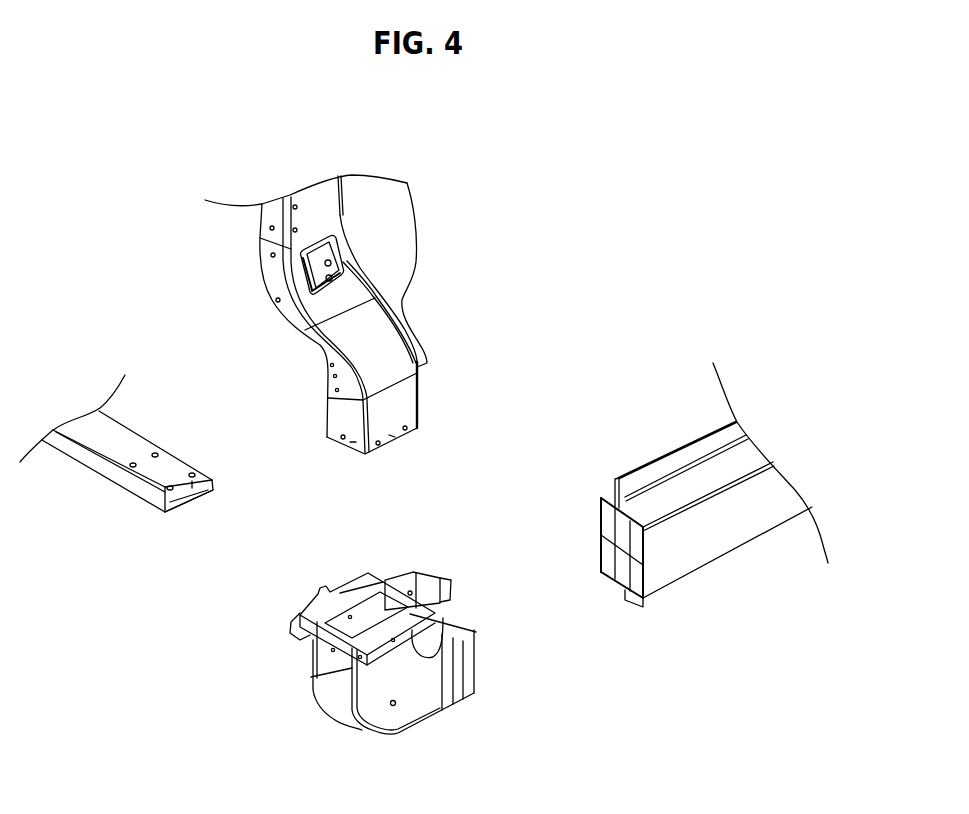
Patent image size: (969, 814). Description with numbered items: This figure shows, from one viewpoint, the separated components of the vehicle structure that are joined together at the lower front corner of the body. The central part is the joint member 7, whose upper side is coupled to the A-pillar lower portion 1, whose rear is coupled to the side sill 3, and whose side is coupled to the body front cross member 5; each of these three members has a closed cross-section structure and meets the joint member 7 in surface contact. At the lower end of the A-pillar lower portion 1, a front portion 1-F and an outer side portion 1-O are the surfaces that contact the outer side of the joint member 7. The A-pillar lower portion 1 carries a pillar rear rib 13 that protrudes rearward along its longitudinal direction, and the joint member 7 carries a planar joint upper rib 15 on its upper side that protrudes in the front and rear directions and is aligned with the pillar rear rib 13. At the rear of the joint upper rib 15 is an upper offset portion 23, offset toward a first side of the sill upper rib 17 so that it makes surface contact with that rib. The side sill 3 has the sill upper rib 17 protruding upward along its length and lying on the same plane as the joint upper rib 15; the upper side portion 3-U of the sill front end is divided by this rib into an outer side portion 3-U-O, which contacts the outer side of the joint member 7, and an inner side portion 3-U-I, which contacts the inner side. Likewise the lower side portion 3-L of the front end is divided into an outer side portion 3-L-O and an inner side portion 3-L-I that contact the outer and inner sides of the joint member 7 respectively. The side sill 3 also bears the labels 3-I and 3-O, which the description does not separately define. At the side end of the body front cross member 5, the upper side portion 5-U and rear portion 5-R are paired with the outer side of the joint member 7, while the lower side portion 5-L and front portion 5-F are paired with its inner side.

The A-pillar lower portion 1 is at (288, 311).
The outer side portion 1-O is at (392, 436).
The front portion 1-F is at (353, 442).
The pillar rear rib 13 is at (375, 280).
The body front cross member 5 is at (127, 447).
The rear portion 5-R is at (215, 483).
The front portion 5-F is at (165, 503).
The upper side portion 5-U is at (192, 486).
The lower side portion 5-L is at (170, 502).
The joint member 7 is at (413, 693).
The joint upper rib 15 is at (423, 585).
The upper offset portion 23 is at (443, 590).
The side sill 3 is at (724, 522).
The upper side portion 3-U is at (638, 420).
The inner side portion 3-U-I is at (607, 497).
The outer side portion 3-U-O is at (630, 523).
The inner wall 3-I is at (603, 526).
The outer wall 3-O is at (651, 561).
The lower side portion 3-L is at (640, 660).
The inner side portion 3-L-I is at (601, 575).
The outer side portion 3-L-O is at (633, 600).
The sill upper rib 17 is at (718, 440).